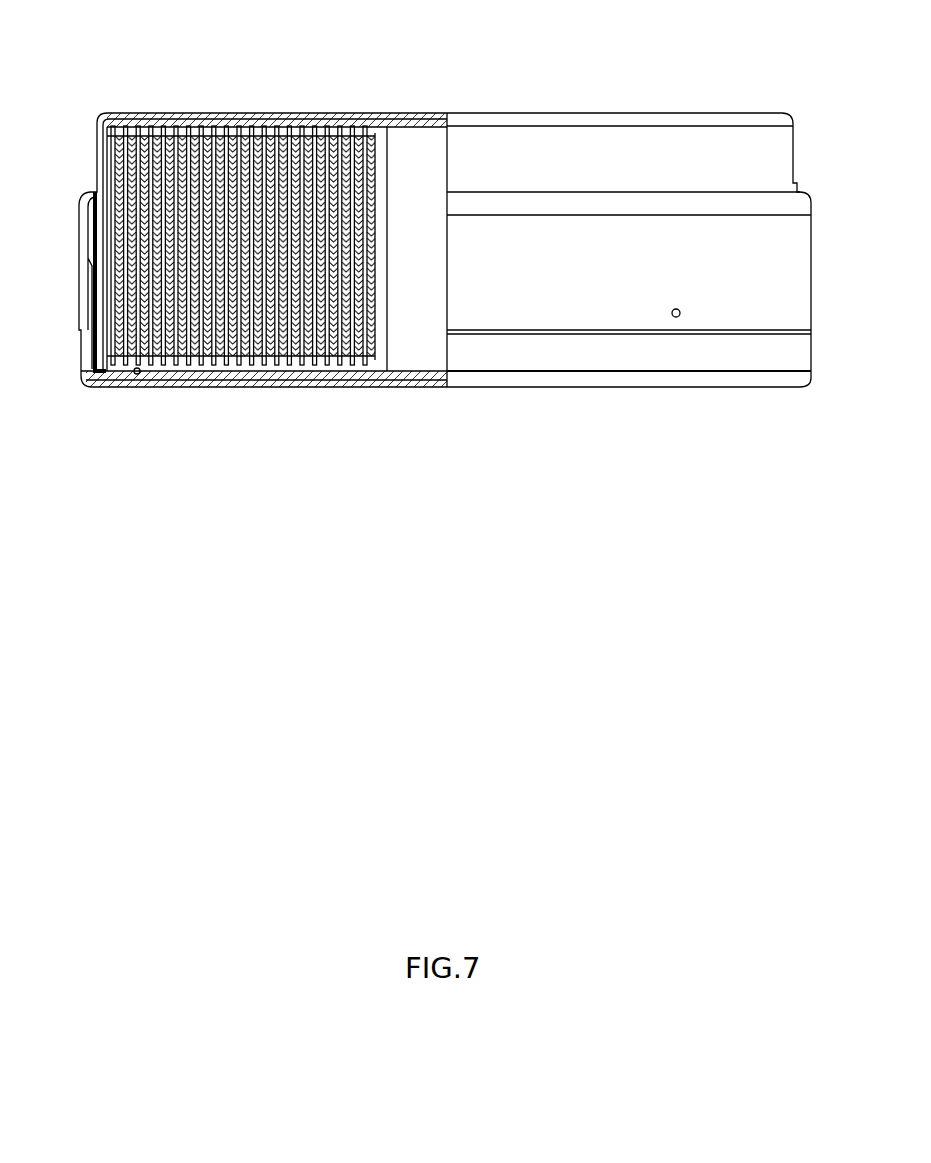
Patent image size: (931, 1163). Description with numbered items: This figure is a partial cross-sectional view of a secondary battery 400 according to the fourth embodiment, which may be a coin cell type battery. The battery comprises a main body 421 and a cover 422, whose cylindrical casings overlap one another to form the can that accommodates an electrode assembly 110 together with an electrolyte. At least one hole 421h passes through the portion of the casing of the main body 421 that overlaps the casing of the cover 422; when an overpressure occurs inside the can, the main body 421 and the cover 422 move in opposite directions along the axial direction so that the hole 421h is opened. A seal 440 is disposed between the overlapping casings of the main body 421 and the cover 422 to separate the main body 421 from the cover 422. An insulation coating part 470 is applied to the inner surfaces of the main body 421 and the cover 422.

The secondary battery 400 is at (731, 36).
The cover 422 is at (389, 105).
The main body 421 is at (389, 386).
The hole 421h is at (676, 318).
The seal 440 is at (96, 190).
The electrode assembly 110 is at (392, 247).
The insulation coating part 470 is at (137, 374).